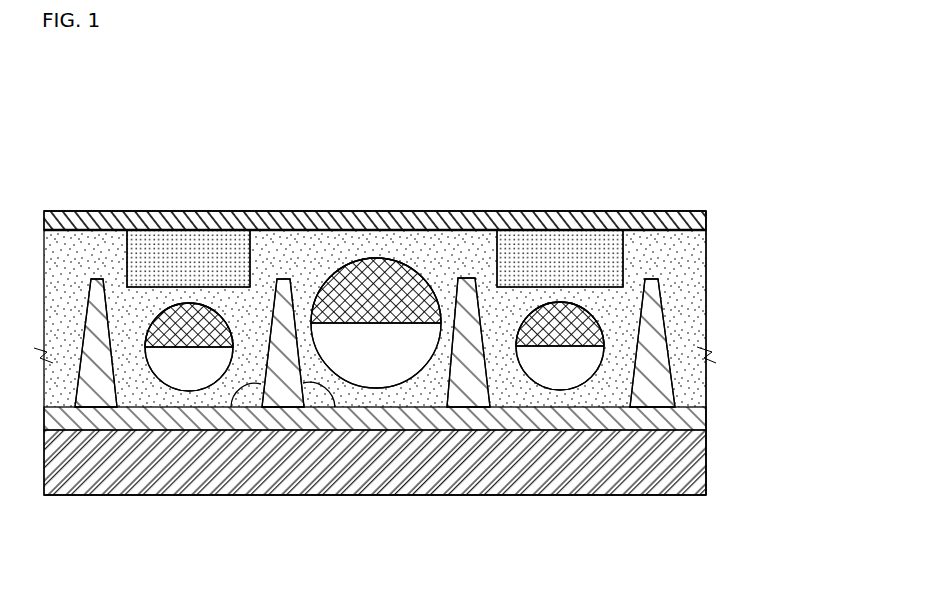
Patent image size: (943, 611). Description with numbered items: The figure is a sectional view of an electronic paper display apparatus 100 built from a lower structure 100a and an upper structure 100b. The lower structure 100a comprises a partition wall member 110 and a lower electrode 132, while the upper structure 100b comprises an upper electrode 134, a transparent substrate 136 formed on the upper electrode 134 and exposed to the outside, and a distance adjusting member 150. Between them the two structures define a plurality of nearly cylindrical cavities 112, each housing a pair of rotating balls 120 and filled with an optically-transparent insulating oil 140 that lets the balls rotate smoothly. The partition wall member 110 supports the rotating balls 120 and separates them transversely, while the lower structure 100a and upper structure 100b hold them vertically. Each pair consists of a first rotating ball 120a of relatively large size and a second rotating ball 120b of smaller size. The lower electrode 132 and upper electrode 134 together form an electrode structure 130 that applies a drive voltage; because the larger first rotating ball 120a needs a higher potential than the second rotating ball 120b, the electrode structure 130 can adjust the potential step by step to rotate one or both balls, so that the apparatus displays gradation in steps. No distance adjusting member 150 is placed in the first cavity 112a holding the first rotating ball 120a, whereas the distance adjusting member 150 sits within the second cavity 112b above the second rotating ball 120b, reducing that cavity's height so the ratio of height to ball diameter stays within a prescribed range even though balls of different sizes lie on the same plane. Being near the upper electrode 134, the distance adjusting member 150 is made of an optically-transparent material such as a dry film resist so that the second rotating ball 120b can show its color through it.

The electronic paper display apparatus 100 is at (86, 75).
The lower structure 100a is at (122, 496).
The upper structure 100b is at (102, 213).
The partition wall member 110 is at (562, 420).
The cavities 112 is at (284, 494).
The first cavity 112a is at (330, 405).
The second cavity 112b is at (235, 408).
The rotating balls 120 is at (374, 244).
The first rotating ball 120a is at (376, 268).
The second rotating ball 120b is at (207, 299).
The electrode structure 130 is at (805, 240).
The lower electrode 132 is at (706, 455).
The upper electrode 134 is at (706, 231).
The transparent substrate 136 is at (706, 217).
The insulating oil 140 is at (663, 247).
The distance adjusting member 150 is at (558, 247).